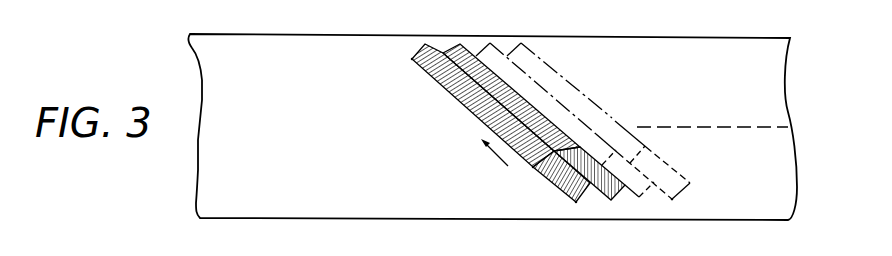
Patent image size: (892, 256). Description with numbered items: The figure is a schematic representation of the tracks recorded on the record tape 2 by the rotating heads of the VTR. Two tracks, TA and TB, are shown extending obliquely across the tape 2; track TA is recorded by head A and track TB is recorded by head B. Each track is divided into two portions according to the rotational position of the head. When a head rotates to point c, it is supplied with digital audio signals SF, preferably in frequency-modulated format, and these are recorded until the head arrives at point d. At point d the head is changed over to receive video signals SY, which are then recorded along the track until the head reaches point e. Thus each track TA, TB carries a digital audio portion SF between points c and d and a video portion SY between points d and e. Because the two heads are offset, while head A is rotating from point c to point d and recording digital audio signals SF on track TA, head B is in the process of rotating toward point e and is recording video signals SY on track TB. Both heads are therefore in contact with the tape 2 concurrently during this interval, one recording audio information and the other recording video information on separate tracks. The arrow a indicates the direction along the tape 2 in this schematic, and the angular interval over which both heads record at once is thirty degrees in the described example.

The tape 2 is at (617, 43).
The track TA is at (441, 44).
The track TB is at (469, 43).
The video signals SY is at (496, 105).
The digital audio signals SF is at (579, 174).
The point e is at (410, 59).
The tape running direction a is at (493, 153).
The point d is at (533, 168).
The point c is at (575, 203).